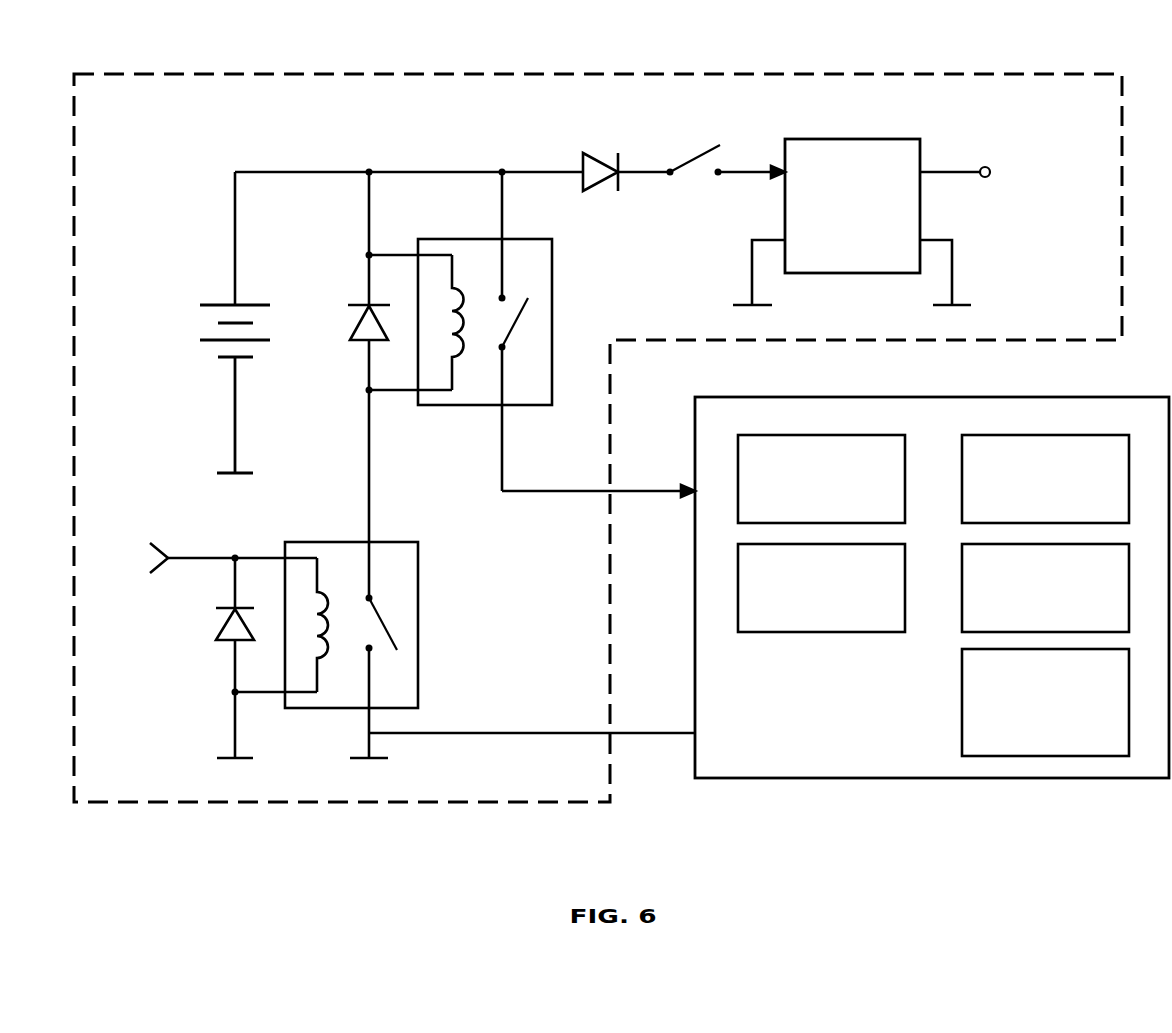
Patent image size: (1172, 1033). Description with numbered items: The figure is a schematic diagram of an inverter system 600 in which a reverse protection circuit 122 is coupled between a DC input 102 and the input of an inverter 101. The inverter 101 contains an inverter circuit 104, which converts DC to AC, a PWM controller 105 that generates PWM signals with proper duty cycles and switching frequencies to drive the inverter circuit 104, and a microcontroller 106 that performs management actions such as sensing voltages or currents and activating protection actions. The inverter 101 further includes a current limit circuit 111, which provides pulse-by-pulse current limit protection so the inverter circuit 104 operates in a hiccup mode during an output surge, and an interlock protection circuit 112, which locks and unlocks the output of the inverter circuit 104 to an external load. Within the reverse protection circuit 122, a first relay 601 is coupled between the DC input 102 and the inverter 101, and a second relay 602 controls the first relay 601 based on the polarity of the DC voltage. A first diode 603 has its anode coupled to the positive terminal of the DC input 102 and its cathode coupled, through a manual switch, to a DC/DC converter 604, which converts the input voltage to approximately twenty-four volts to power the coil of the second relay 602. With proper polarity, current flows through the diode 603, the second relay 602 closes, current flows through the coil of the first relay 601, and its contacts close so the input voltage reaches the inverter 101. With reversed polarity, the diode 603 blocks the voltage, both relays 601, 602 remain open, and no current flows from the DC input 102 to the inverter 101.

The inverter system 600 is at (621, 403).
The reverse protection circuit 122 is at (203, 135).
The DC input 102 is at (169, 340).
The first relay 601 is at (553, 287).
The second relay 602 is at (428, 617).
The first diode 603 is at (577, 160).
The DC/DC converter 604 is at (835, 263).
The inverter 101 is at (795, 715).
The current limit circuit 111 is at (806, 512).
The inverter circuit 104 is at (1029, 501).
The PWM controller 105 is at (805, 610).
The microcontroller 106 is at (1029, 610).
The interlock protection circuit 112 is at (1029, 751).